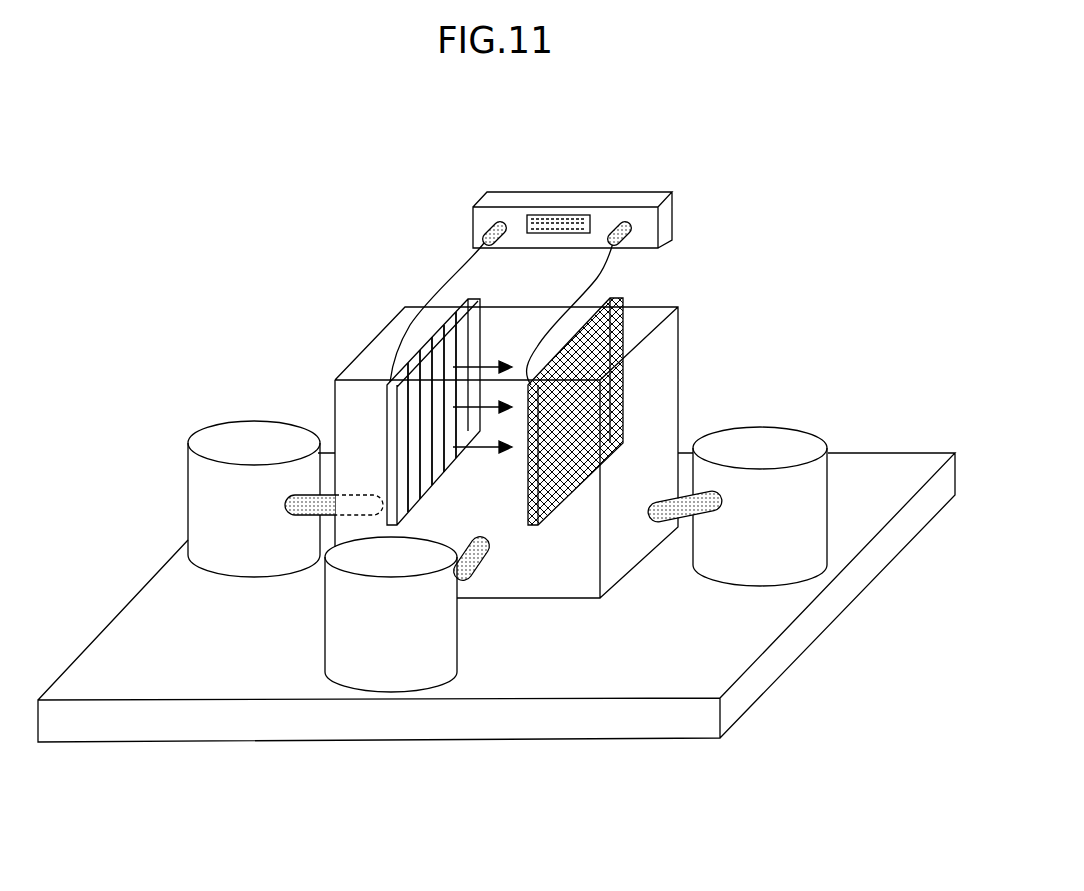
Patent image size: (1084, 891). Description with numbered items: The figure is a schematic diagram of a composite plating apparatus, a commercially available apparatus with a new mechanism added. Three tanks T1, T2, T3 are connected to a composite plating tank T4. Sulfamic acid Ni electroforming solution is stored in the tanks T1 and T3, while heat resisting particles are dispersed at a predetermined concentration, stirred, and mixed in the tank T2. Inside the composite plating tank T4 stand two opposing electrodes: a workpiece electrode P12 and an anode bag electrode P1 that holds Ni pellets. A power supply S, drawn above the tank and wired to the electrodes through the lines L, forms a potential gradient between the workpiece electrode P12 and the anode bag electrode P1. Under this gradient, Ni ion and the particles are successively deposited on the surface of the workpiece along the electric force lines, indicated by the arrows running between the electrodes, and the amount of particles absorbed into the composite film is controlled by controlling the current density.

The power supply S is at (655, 195).
The lead wire L is at (447, 280).
The anode bag electrode P1 is at (624, 348).
The workpiece electrode P12 is at (418, 440).
The tank T1 is at (187, 463).
The tank T2 is at (457, 633).
The tank T3 is at (812, 432).
The composite plating tank T4 is at (666, 393).